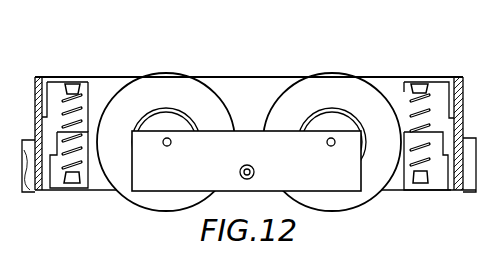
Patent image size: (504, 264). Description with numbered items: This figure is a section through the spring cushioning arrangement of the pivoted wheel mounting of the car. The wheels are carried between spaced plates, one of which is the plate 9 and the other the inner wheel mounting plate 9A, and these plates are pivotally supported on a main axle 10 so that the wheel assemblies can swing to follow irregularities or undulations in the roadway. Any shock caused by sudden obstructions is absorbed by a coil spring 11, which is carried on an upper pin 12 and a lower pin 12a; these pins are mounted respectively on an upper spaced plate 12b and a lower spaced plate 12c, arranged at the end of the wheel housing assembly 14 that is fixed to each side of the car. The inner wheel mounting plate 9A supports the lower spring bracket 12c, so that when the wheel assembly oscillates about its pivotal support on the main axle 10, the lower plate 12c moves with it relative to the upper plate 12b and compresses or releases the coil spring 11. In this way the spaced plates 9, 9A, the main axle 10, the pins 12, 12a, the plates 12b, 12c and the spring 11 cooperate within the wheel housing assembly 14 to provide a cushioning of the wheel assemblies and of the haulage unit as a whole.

The spaced plate 9 is at (318, 161).
The inner wheel mounting plate 9A is at (240, 83).
The main axle 10 is at (257, 165).
The spring 11 is at (82, 97).
The pin 12 is at (72, 84).
The pin 12a is at (72, 174).
The spaced plate 12b is at (50, 77).
The lower spring bracket 12c is at (91, 192).
The wheel housing assembly 14 is at (481, 112).